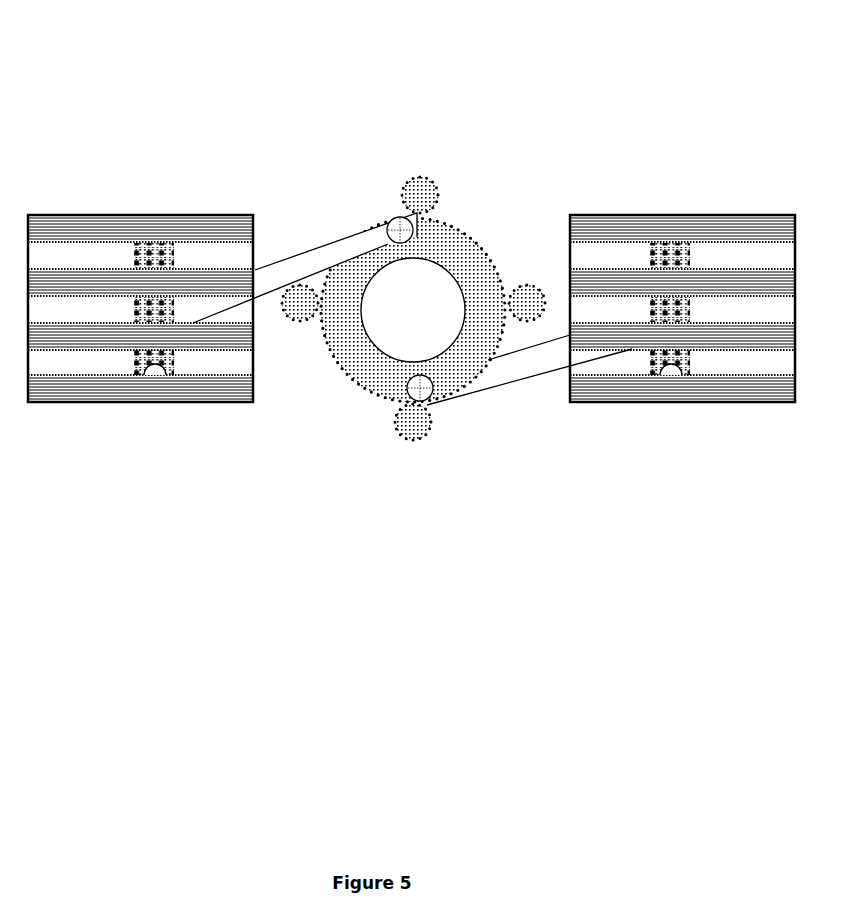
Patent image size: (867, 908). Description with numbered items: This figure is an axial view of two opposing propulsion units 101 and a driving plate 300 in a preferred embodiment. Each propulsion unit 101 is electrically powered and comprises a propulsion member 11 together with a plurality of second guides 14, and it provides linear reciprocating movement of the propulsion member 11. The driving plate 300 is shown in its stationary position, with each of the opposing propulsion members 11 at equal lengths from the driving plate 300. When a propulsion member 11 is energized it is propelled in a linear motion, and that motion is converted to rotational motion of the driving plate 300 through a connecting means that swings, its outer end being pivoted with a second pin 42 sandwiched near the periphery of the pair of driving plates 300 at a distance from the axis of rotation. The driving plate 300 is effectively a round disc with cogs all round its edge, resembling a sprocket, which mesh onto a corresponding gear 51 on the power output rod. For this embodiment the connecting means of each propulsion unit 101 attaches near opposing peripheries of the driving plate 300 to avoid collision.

The propulsion unit 101 is at (411, 337).
The second guides 14 is at (133, 403).
The propulsion member 11 is at (167, 367).
The driving plate 300 is at (433, 238).
The second pin 42 is at (398, 242).
The gear 51 is at (410, 183).